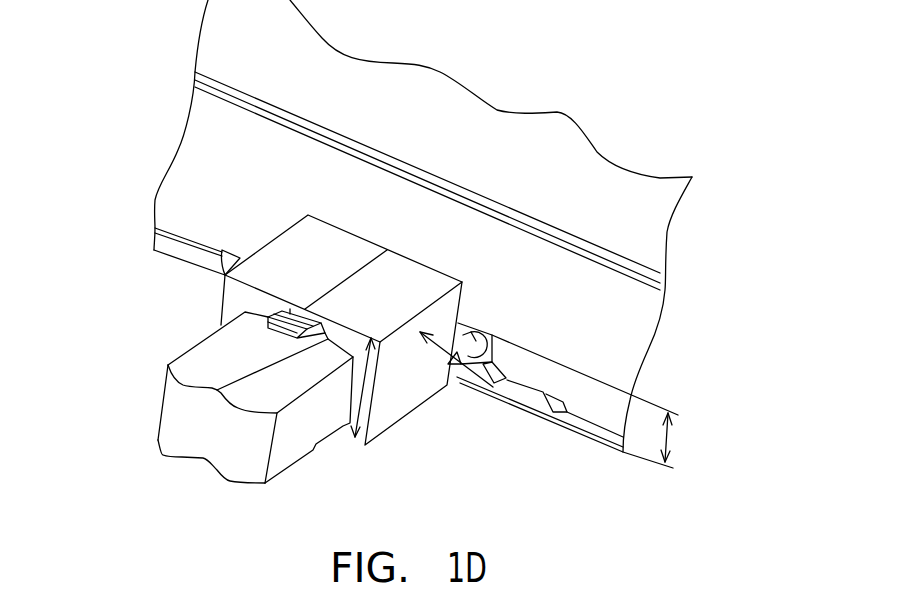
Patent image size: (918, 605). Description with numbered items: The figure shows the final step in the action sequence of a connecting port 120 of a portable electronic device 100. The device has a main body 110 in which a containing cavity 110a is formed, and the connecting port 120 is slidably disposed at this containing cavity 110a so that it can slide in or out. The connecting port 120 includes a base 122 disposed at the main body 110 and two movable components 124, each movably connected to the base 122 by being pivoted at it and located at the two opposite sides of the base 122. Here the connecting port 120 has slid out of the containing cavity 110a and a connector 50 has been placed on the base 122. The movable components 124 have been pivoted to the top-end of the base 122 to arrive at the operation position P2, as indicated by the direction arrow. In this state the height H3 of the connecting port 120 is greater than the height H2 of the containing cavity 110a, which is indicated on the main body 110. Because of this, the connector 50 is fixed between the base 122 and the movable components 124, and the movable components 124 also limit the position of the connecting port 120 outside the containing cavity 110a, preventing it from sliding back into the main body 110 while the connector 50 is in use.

The portable electronic device 100 is at (748, 521).
The main body 110 is at (622, 345).
The containing cavity 110a is at (470, 362).
The connecting port 120 is at (263, 213).
The base 122 is at (390, 407).
The movable component 124 is at (230, 300).
The connector 50 is at (292, 457).
The height of the containing cavity H2 is at (668, 437).
The height of the connecting port H3 is at (359, 413).
The operation position P2 is at (493, 387).